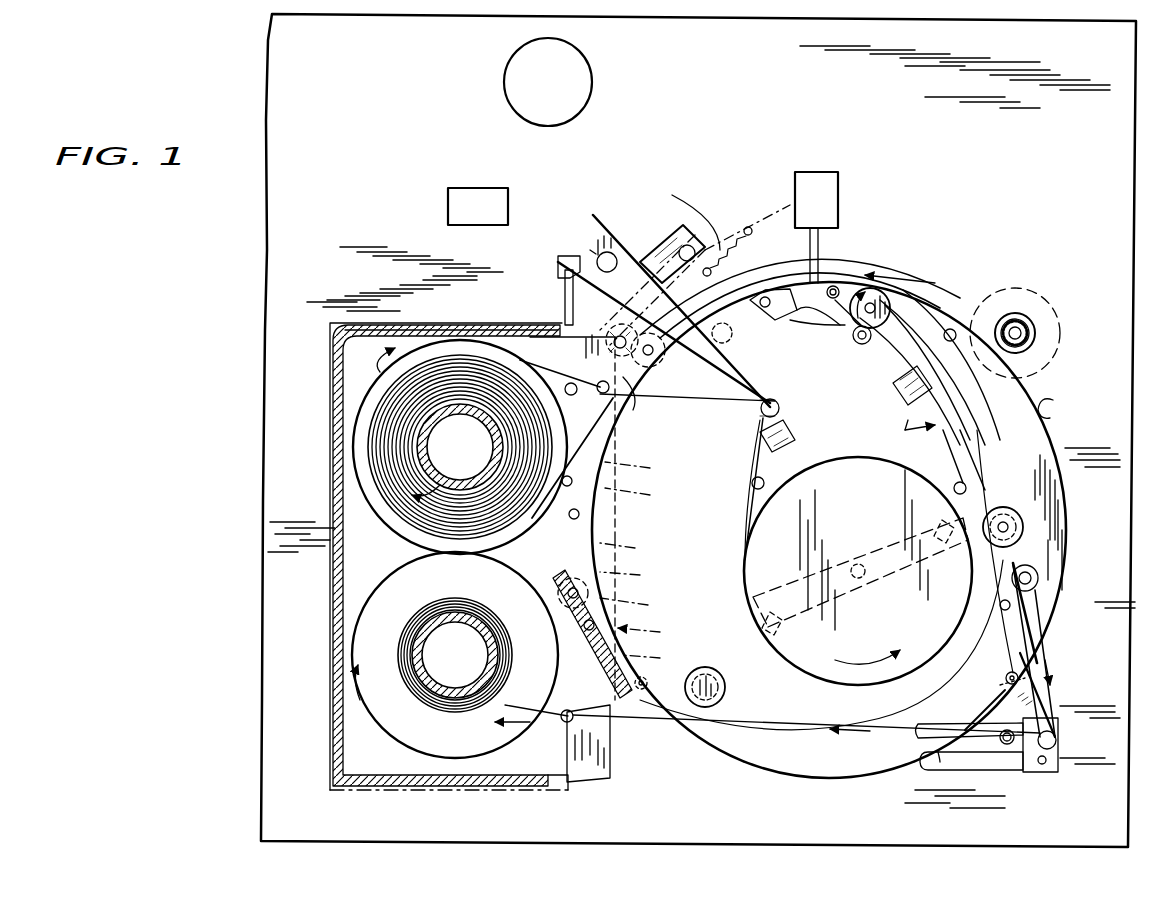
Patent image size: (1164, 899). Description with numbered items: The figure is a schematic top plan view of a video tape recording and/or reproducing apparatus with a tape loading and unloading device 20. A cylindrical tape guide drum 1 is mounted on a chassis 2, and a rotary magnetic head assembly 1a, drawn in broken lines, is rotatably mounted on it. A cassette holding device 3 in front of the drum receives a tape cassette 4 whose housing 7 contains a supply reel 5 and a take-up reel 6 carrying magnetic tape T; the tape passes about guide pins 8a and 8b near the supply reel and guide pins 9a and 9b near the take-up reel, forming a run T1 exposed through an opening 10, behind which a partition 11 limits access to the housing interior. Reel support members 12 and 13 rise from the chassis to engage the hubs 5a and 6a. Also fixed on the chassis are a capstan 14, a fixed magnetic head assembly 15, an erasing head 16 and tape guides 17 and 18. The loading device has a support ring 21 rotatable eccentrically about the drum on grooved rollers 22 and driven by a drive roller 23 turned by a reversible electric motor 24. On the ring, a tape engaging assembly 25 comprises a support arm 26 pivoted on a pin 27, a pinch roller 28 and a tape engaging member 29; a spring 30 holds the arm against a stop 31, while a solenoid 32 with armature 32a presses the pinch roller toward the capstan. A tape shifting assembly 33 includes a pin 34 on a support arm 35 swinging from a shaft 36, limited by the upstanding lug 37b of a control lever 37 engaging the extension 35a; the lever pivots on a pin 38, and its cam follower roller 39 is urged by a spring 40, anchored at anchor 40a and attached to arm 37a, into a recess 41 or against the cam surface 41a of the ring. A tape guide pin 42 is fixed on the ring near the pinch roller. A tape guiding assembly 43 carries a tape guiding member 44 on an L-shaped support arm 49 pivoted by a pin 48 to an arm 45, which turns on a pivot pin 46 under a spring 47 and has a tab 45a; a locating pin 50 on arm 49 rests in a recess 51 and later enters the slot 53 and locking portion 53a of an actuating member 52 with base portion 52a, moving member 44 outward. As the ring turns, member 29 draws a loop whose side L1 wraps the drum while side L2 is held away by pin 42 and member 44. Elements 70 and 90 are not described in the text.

The tape guide drum 1 is at (797, 668).
The rotary magnetic head assembly 1a is at (855, 592).
The chassis 2 is at (500, 834).
The cassette holding device 3 is at (358, 792).
The tape cassette 4 is at (330, 595).
The supply reel 5 is at (350, 470).
The hub of supply reel 5a is at (418, 473).
The take-up reel 6 is at (358, 707).
The hub of take-up reel 6a is at (495, 657).
The cassette housing 7 is at (425, 335).
The guide pin 8a is at (571, 386).
The guide pin 8b is at (598, 372).
The guide pin 9a is at (563, 728).
The guide pin 9b is at (620, 725).
The opening 10 is at (606, 508).
The partition 11 is at (552, 580).
The supply reel support member 12 is at (472, 445).
The take-up reel support member 13 is at (468, 655).
The capstan 14 is at (862, 344).
The fixed magnetic head assembly 15 is at (905, 392).
The erasing head 16 is at (763, 600).
The tape guide 17 is at (958, 480).
The tape guide 18 is at (785, 452).
The tape loading and unloading device 20 is at (972, 308).
The support ring 21 is at (1066, 478).
The grooved rollers 22 is at (1025, 530).
The drive roller 23 is at (1022, 336).
The reversible electric motor 24 is at (1052, 292).
The tape engaging assembly 25 is at (895, 282).
The support arm 26 is at (853, 337).
The pin 27 is at (800, 322).
The pinch roller 28 is at (965, 298).
The tape engaging member 29 is at (915, 268).
The spring 30 is at (795, 328).
The stop 31 is at (792, 268).
The solenoid 32 is at (822, 195).
The armature 32a is at (822, 242).
The tape shifting assembly 33 is at (775, 375).
The pin 34 is at (760, 412).
The support arm 35 is at (745, 300).
The extension of arm 35a is at (562, 258).
The shaft 36 is at (612, 246).
The control lever 37 is at (663, 250).
The arm of lever 37a is at (710, 268).
The upstanding lug 37b is at (565, 300).
The pin 38 is at (691, 209).
The cam follower roller 39 is at (645, 365).
The spring 40 is at (736, 243).
The anchor 40a is at (750, 228).
The recess 41 is at (635, 385).
The cam surface 41a is at (763, 297).
The tape guide pin 42 is at (942, 336).
The tape guiding assembly 43 is at (1043, 645).
The tape guiding member 44 is at (1058, 742).
The arm 45 is at (1032, 590).
The upwardly bent tab 45a is at (1000, 693).
The pivot pin 46 is at (1032, 582).
The spring 47 is at (1003, 600).
The pin 48 is at (1005, 676).
The L-shaped support arm 49 is at (1030, 705).
The locating pin 50 is at (955, 715).
The recess 51 is at (1055, 400).
The actuating member 52 is at (968, 768).
The base portion 52a is at (1060, 765).
The slot 53 is at (935, 757).
The locking portion 53a is at (1008, 748).
The reel disk 70 is at (592, 82).
The control unit 90 is at (472, 195).
The magnetic tape T is at (500, 385).
The tape run T1 is at (635, 576).
The side of tape loop L1 is at (745, 533).
The other side of tape loop L2 is at (730, 752).